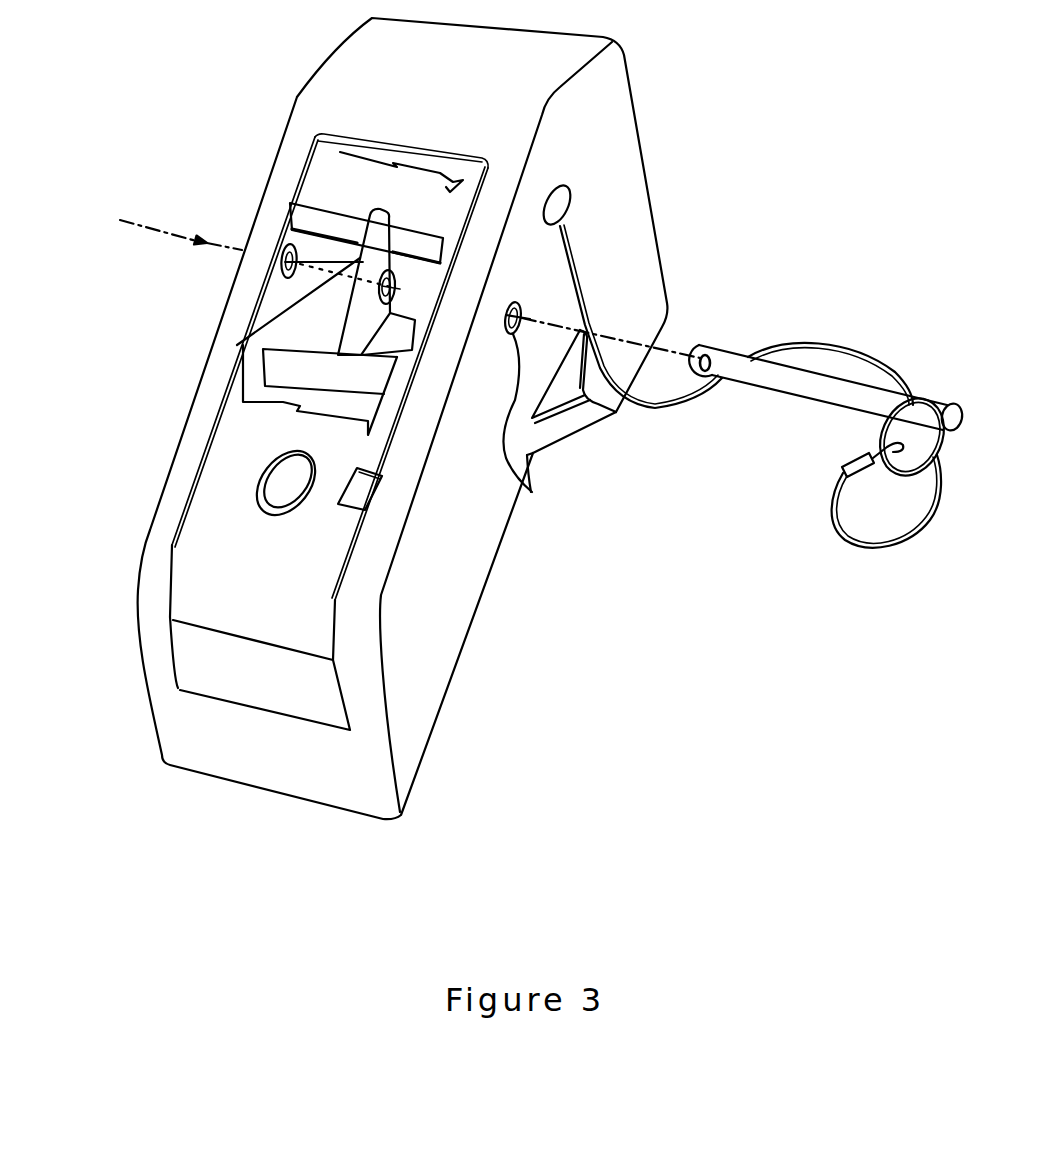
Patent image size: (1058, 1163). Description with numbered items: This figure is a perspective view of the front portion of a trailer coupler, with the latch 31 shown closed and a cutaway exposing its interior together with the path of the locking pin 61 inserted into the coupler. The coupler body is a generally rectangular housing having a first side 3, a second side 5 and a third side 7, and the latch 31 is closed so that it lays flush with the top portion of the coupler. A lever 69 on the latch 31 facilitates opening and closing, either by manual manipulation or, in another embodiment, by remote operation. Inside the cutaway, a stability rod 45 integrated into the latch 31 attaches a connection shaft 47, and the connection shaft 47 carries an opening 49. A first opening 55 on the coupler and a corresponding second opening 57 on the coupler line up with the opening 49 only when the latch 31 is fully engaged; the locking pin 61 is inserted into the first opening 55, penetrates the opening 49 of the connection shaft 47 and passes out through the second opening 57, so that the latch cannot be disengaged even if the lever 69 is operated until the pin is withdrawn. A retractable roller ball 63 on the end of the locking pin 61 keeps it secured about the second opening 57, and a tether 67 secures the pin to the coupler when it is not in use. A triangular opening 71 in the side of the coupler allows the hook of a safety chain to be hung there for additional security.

The first side 3 is at (128, 526).
The second side 5 is at (160, 695).
The third side 7 is at (443, 590).
The latch 31 is at (310, 610).
The stability rod 45 is at (320, 217).
The connection shaft 47 is at (283, 251).
The opening 49 is at (392, 292).
The first opening 55 is at (509, 458).
The second opening 57 is at (193, 242).
The locking pin 61 is at (723, 352).
The retractable roller ball 63 is at (697, 357).
The tether 67 is at (585, 283).
The lever 69 is at (280, 498).
The triangular opening 71 is at (613, 412).